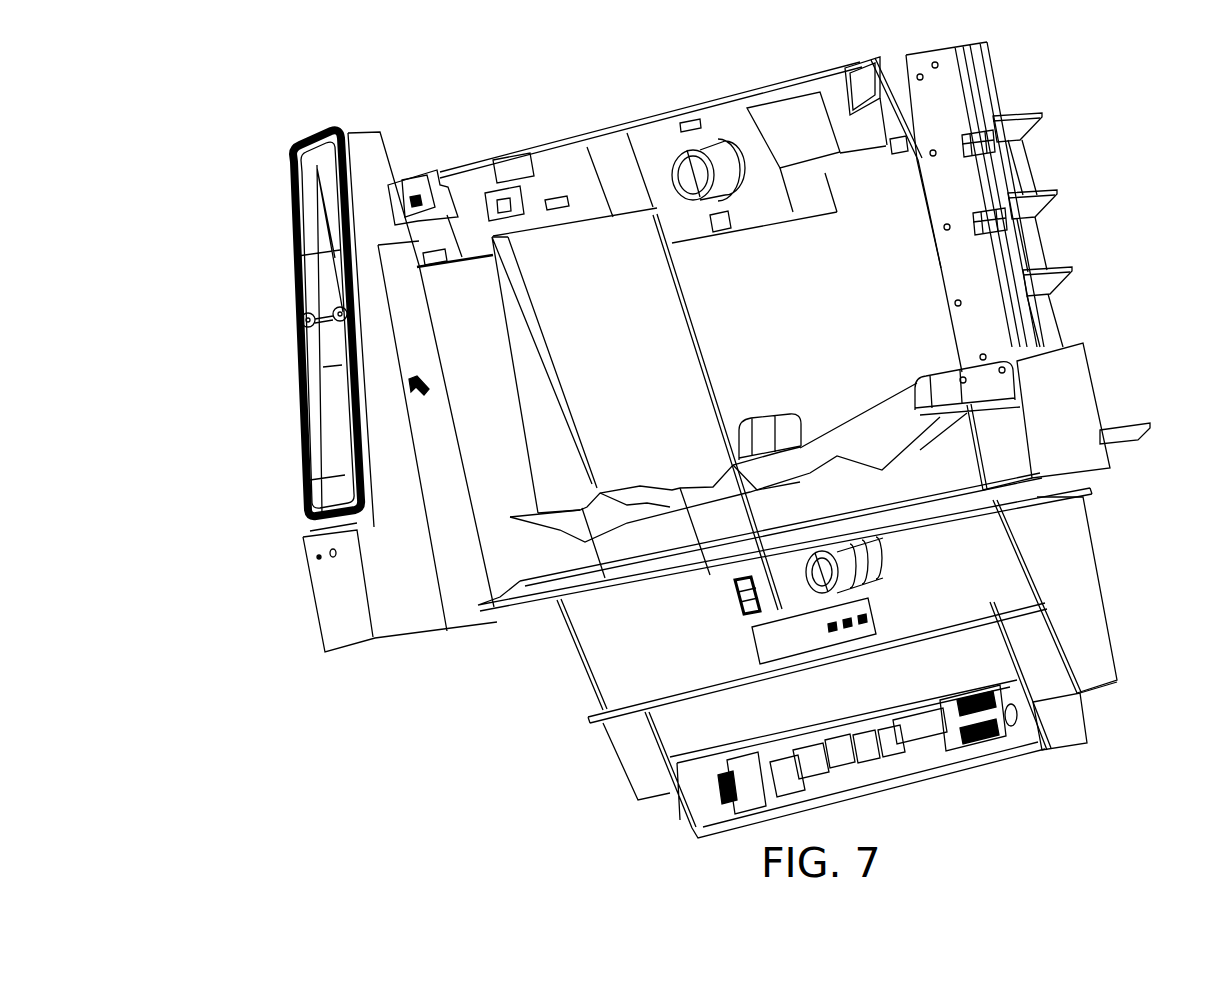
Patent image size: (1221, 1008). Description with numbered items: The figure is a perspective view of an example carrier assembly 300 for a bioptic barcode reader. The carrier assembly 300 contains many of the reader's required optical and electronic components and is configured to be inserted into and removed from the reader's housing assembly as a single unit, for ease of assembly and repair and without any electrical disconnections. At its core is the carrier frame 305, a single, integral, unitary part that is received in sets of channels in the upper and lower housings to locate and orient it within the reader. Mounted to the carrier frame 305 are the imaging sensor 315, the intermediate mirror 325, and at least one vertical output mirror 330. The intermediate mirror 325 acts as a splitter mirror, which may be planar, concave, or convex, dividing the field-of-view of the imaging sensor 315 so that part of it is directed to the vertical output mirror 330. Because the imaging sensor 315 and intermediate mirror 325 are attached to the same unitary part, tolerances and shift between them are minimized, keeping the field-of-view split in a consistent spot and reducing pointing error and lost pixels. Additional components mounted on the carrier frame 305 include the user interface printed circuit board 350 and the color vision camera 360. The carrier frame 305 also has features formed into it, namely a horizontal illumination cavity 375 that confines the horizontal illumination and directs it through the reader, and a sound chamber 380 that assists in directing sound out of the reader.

The carrier assembly 300 is at (212, 95).
The carrier frame 305 is at (1080, 590).
The imaging sensor 315 is at (838, 567).
The intermediate mirror 325 is at (740, 592).
The vertical output mirror 330 is at (593, 243).
The user interface printed circuit board 350 is at (953, 116).
The color vision camera 360 is at (680, 152).
The horizontal illumination cavity 375 is at (762, 655).
The sound chamber 380 is at (318, 235).